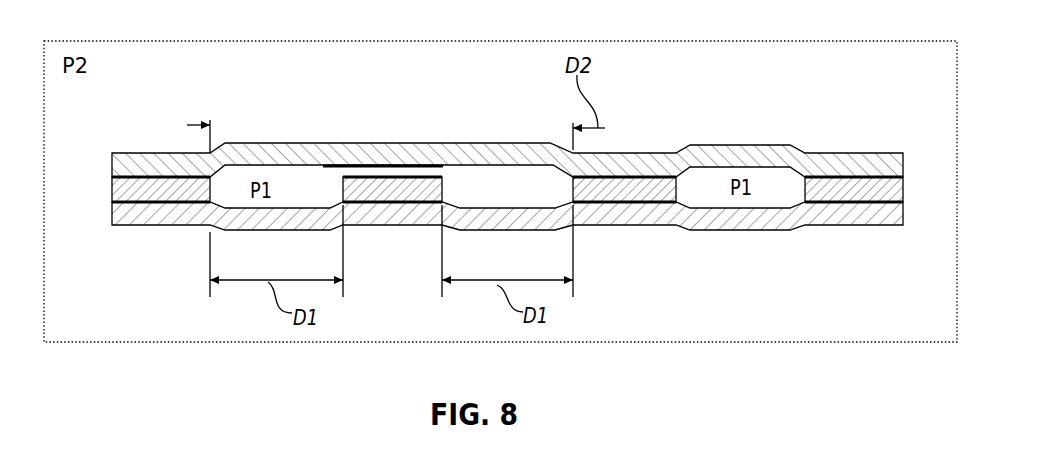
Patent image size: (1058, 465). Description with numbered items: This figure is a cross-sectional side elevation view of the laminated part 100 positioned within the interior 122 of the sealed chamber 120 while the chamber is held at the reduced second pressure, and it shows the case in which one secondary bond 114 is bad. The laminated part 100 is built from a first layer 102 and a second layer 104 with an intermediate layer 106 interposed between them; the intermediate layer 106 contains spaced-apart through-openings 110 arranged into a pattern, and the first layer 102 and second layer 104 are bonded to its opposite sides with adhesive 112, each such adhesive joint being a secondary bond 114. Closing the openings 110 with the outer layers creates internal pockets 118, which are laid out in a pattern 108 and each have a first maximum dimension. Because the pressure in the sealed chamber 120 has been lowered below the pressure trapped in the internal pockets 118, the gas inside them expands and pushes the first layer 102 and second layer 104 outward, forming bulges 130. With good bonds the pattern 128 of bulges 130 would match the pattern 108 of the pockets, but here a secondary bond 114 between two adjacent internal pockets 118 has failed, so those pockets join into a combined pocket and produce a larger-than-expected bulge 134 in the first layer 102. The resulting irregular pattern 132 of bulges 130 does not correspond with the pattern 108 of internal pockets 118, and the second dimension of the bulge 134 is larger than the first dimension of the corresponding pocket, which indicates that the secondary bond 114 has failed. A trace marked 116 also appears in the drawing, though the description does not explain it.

The laminated part 100 is at (888, 93).
The first layer 102 is at (867, 162).
The second layer 104 is at (846, 217).
The intermediate layer 106 is at (118, 193).
The pattern of internal pockets 108 is at (120, 212).
The openings 110 is at (212, 183).
The adhesive 112 is at (173, 175).
The secondary bond 114 is at (150, 174).
The conductive trace 116 is at (340, 169).
The internal pockets 118 is at (272, 183).
The sealed chamber 120 is at (760, 41).
The interior 122 is at (675, 72).
The pattern of bulges 128 is at (206, 240).
The bulges 130 is at (276, 232).
The irregular pattern of bulges 132 is at (221, 128).
The bulge 134 is at (503, 147).